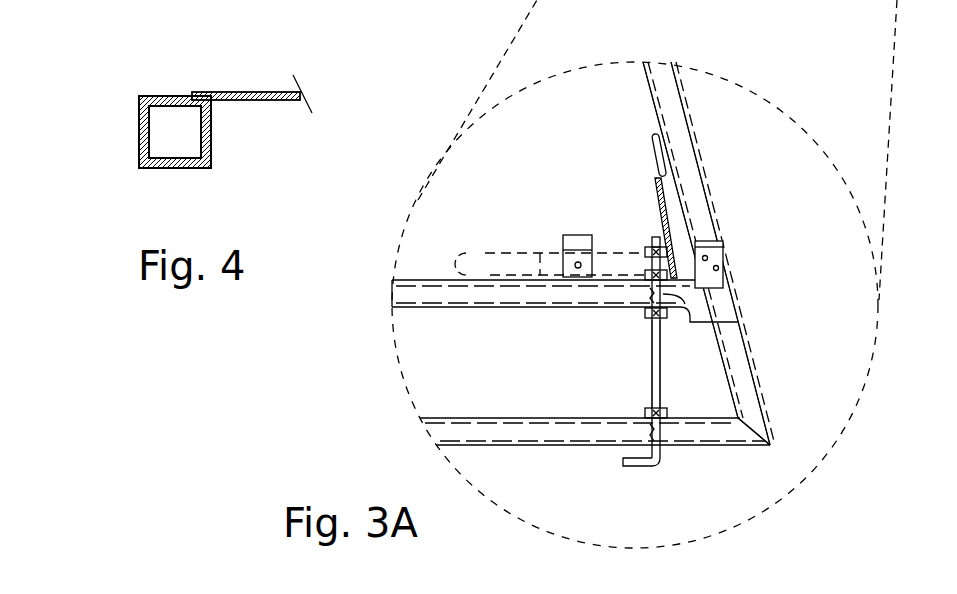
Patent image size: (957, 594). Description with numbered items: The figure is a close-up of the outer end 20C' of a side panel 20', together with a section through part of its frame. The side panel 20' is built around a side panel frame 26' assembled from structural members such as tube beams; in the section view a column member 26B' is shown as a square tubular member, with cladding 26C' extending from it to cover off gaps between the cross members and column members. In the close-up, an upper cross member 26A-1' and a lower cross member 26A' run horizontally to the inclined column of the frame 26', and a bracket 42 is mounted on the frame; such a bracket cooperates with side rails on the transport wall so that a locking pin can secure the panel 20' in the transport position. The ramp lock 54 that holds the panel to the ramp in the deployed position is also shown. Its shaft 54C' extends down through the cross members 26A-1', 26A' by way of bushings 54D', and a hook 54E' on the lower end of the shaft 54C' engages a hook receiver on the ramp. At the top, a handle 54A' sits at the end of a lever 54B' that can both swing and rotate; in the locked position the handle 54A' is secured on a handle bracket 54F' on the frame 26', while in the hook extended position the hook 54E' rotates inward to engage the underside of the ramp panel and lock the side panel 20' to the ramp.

In FIG. 4, the column member 26B' is at (118, 132).
In FIG. 3A, the column member 26B' is at (762, 253).
In FIG. 4, the cladding 26C' is at (254, 115).
In FIG. 3A, the side panel frame 26' is at (709, 253).
In FIG. 3A, the outer end 20C' is at (744, 240).
In FIG. 3A, the side panel 20' is at (785, 374).
In FIG. 3A, the bracket 42 is at (724, 258).
In FIG. 3A, the cross member 26A-1' is at (543, 255).
In FIG. 3A, the cross member 26A' is at (595, 470).
In FIG. 3A, the bushing 54D' is at (725, 359).
In FIG. 3A, the ramp lock 54 is at (661, 356).
In FIG. 3A, the shaft 54C' is at (616, 364).
In FIG. 3A, the hook 54E' is at (671, 486).
In FIG. 3A, the handle 54A' is at (561, 194).
In FIG. 3A, the handle bracket 54F' is at (569, 211).
In FIG. 3A, the lever 54B' is at (637, 226).